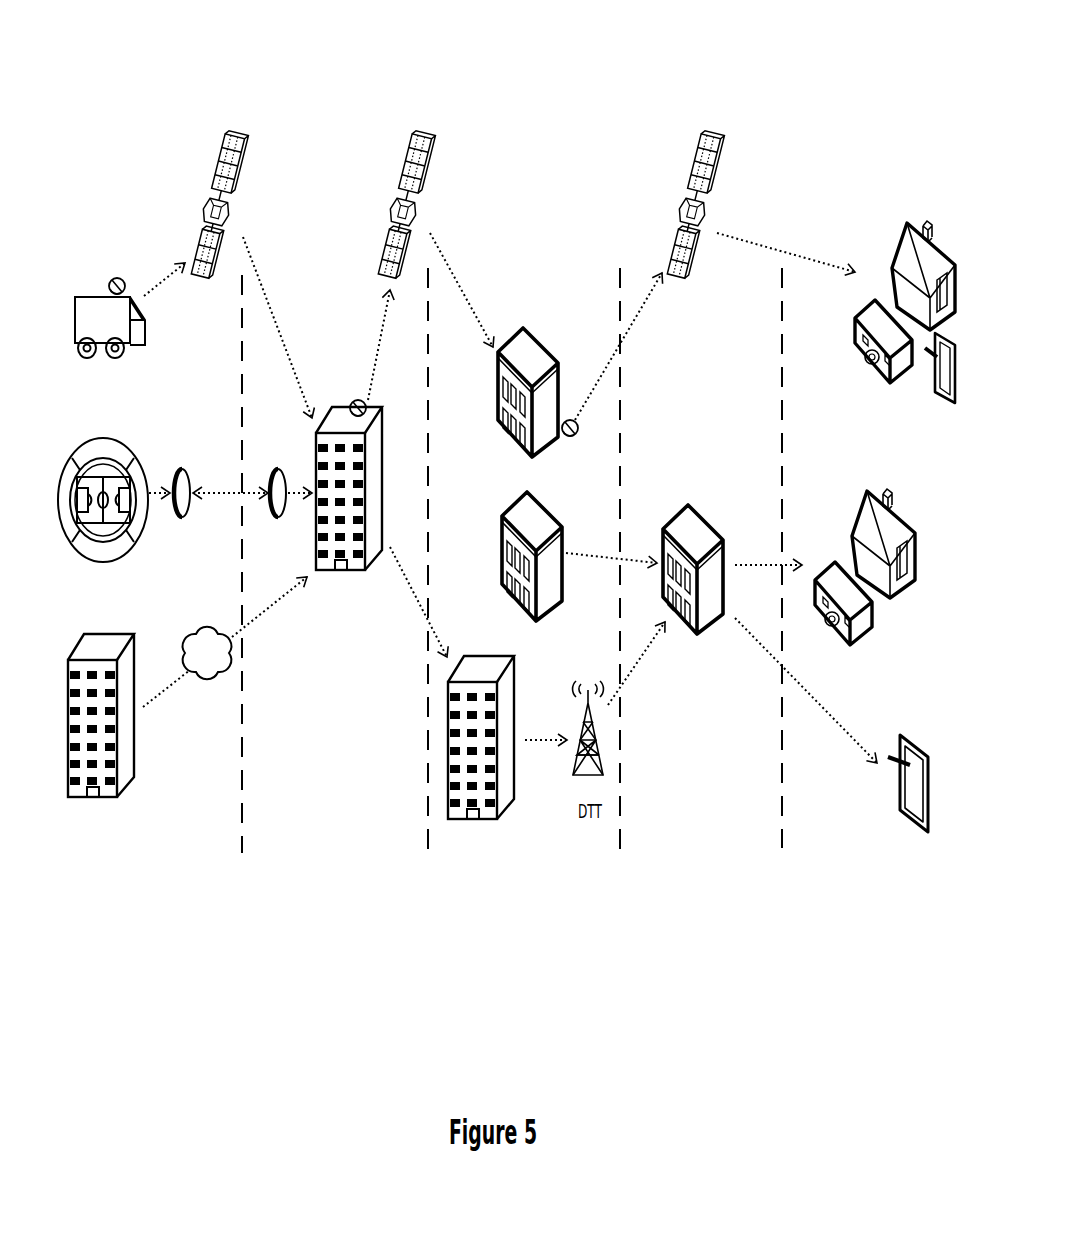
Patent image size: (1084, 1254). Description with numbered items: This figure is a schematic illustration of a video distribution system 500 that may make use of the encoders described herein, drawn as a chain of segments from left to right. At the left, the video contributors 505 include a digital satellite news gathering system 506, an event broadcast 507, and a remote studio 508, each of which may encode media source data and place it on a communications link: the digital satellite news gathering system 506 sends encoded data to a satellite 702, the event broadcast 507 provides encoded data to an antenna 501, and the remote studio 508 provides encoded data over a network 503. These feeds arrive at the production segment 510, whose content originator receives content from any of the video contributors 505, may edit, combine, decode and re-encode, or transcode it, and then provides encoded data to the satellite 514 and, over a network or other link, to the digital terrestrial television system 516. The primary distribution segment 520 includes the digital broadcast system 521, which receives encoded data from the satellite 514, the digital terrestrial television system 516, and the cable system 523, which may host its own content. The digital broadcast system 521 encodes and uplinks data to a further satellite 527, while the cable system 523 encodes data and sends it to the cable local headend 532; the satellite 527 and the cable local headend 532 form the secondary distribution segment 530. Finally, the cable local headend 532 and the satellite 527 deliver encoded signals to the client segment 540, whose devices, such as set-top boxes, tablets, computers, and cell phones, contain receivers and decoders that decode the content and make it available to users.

The video distribution system 500 is at (868, 33).
The antenna 501 is at (190, 468).
The network 503 is at (195, 677).
The video contributors 505 is at (122, 924).
The digital satellite news gathering system 506 is at (91, 296).
The event broadcast 507 is at (137, 458).
The remote studio 508 is at (134, 662).
The production segment 510 is at (335, 924).
The satellite 514 is at (426, 132).
The digital terrestrial television system 516 is at (490, 822).
The primary distribution segment 520 is at (538, 924).
The digital broadcast system 521 is at (558, 367).
The cable system 523 is at (560, 527).
The satellite 527 is at (714, 132).
The secondary distribution segment 530 is at (714, 924).
The cable local headend 532 is at (722, 540).
The client segment 540 is at (888, 924).
The satellite 702 is at (238, 132).